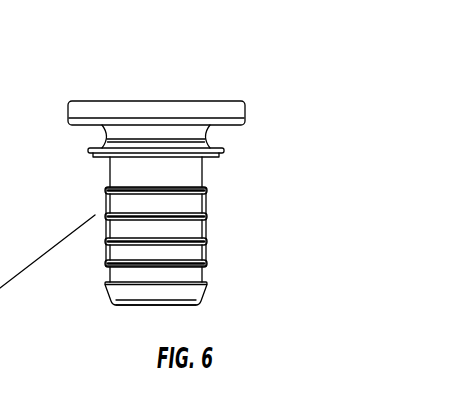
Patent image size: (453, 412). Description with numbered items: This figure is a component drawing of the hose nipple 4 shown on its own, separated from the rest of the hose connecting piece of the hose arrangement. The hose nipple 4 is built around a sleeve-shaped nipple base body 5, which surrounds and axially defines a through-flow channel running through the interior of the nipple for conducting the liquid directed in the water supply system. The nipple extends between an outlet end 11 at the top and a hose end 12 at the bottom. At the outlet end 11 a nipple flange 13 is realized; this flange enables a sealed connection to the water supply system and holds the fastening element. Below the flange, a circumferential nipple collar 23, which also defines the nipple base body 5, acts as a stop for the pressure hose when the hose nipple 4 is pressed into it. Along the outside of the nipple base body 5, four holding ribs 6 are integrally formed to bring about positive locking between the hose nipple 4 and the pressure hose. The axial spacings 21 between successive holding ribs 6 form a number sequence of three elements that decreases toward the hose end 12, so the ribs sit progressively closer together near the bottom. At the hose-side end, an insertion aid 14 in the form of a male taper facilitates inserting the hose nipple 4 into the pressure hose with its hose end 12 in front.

The hose nipple 4 is at (31, 123).
The outlet end 11 is at (125, 72).
The nipple flange 13 is at (219, 108).
The nipple collar 23 is at (223, 152).
The nipple base body 5 is at (193, 201).
The holding ribs 6 is at (211, 182).
The axial spacings 21 is at (95, 190).
The insertion aid 14 is at (193, 297).
The hose end 12 is at (144, 313).